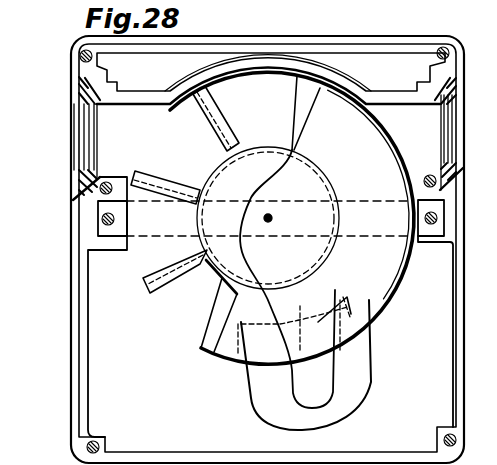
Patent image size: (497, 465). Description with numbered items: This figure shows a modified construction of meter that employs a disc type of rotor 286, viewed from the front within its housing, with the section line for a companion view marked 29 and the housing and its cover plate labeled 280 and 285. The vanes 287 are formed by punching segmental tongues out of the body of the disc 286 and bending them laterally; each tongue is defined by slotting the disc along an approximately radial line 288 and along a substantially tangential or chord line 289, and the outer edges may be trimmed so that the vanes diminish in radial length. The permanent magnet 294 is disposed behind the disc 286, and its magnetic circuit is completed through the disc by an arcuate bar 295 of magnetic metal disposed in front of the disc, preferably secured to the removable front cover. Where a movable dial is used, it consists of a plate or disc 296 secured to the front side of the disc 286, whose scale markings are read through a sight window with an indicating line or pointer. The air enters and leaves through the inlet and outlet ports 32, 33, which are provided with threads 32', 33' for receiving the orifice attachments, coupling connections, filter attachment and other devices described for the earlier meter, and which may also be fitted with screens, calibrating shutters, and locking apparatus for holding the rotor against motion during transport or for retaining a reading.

The housing 280 is at (267, 231).
The cover plate 285 is at (271, 52).
The section line 29- 29 is at (252, 21).
The inlet port 32 is at (66, 127).
The threads 32' is at (63, 178).
The outlet port 33 is at (466, 134).
The threads 33' is at (468, 168).
The disc type rotor 286 is at (381, 133).
The movable dial plate 296 is at (372, 156).
The tangential or chord line 289 is at (273, 148).
The vanes 287 is at (203, 150).
The radial line 288 is at (297, 95).
The permanent magnet 294 is at (371, 382).
The arcuate bar 295 is at (373, 318).